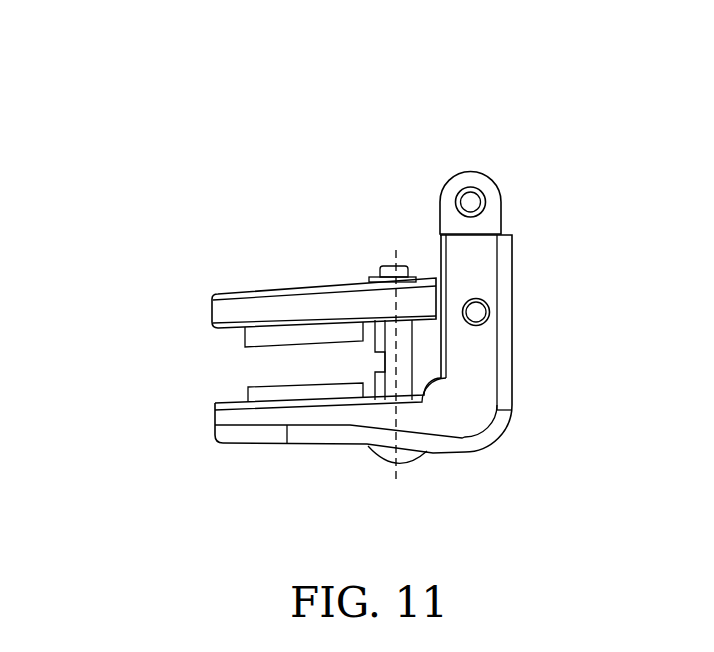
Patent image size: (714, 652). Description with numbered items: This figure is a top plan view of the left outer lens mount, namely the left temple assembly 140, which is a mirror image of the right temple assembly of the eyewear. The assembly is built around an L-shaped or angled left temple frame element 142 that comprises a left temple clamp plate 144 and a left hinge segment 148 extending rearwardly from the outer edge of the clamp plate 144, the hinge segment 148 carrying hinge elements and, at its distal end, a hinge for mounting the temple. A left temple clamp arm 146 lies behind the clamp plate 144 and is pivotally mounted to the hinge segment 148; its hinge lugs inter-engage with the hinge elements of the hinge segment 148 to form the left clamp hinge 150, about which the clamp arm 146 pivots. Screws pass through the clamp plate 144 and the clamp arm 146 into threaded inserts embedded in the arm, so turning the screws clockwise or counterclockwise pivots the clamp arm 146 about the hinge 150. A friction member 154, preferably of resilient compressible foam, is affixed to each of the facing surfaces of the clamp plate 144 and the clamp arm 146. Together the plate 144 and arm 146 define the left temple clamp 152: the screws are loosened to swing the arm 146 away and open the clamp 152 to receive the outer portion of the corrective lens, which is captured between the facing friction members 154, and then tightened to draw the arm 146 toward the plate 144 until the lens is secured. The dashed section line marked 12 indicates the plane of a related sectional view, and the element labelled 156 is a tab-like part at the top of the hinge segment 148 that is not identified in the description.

The left temple assembly 140 is at (147, 72).
The left temple frame element 142 is at (499, 438).
The left temple clamp plate 144 is at (245, 446).
The left temple clamp arm 146 is at (243, 293).
The left hinge segment 148 is at (513, 365).
The left clamp hinge 150 is at (490, 312).
The left temple clamp 152 is at (226, 369).
The friction member 154 is at (243, 340).
The tab 156 is at (498, 186).
The section line 12- 12 is at (396, 250).